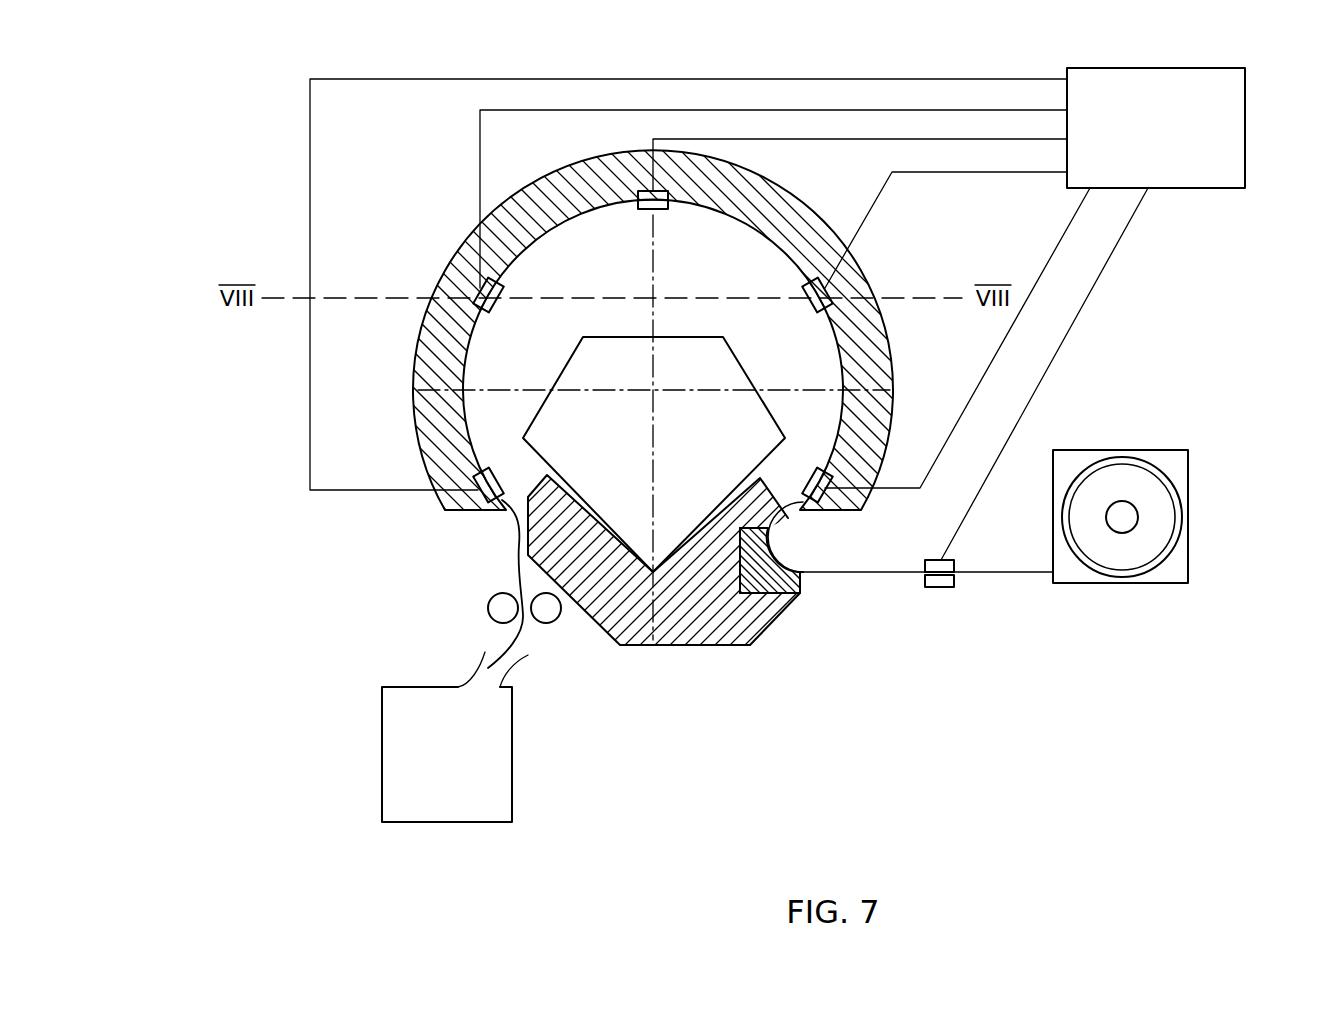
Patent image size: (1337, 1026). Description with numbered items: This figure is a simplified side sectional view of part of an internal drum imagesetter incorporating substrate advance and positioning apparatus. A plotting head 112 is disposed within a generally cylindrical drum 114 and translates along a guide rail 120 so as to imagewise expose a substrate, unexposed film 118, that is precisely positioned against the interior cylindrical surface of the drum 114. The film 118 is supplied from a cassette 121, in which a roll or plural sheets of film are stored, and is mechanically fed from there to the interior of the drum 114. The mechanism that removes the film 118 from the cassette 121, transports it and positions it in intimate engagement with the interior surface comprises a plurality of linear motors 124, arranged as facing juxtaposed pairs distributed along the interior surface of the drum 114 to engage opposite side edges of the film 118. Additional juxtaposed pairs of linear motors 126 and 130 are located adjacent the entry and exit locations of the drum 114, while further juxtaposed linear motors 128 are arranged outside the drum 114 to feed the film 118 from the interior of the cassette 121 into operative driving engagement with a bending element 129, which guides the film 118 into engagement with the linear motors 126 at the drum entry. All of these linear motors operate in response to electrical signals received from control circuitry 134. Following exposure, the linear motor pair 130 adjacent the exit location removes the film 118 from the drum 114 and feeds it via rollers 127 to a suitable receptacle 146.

The plotting head 112 is at (580, 375).
The drum 114 is at (870, 310).
The film 118 is at (883, 576).
The guide rail 120 is at (680, 620).
The cassette 121 is at (1125, 478).
The linear motors 124 is at (495, 288).
The juxtaposed pair of linear motors 126 is at (813, 470).
The rollers 127 is at (546, 615).
The juxtaposed pairs of linear motors 128 is at (938, 588).
The bending element 129 is at (770, 593).
The juxtaposed pair of linear motors 130 is at (480, 500).
The control circuitry 134 is at (1197, 190).
The receptacle 146 is at (494, 745).